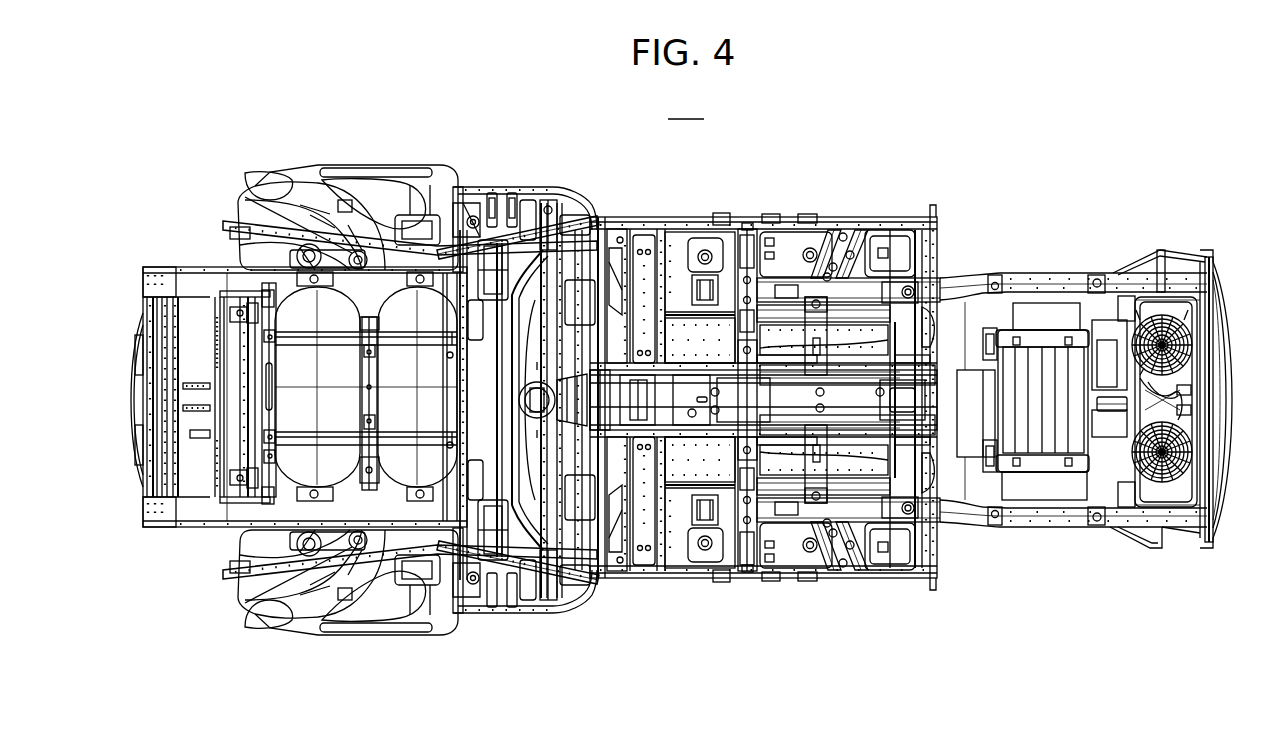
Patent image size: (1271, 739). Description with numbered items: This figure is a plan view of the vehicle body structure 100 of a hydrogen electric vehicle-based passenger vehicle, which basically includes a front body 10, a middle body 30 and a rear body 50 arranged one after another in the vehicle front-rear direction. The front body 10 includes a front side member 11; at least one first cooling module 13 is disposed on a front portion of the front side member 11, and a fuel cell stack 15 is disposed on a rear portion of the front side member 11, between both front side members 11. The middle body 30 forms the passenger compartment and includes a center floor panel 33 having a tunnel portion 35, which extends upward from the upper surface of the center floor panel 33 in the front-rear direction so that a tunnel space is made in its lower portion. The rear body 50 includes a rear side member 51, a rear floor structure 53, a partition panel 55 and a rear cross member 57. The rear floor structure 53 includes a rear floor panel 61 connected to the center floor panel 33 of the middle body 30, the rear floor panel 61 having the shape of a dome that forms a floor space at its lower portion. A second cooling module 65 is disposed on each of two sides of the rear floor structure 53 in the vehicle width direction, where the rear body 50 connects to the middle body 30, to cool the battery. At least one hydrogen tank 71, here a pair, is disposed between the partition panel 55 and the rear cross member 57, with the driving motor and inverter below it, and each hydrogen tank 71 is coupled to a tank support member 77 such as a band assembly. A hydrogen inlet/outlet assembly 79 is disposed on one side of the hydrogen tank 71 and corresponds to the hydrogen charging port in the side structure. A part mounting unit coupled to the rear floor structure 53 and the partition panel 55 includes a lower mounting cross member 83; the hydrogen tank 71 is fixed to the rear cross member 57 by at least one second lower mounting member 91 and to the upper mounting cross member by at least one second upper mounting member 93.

The vehicle body structure 100 is at (686, 107).
The front body 10 is at (1078, 557).
The front side member 11 is at (1076, 282).
The first cooling module 13 is at (1187, 383).
The fuel cell stack 15 is at (1046, 384).
The middle body 30 is at (740, 592).
The center floor panel 33 is at (690, 470).
The tunnel portion 35 is at (698, 368).
The rear body 50 is at (468, 625).
The rear side member 51 is at (175, 284).
The rear floor structure 53 is at (527, 216).
The partition panel 55 is at (525, 341).
The rear cross member 57 is at (192, 305).
The rear floor panel 61 is at (528, 580).
The second cooling module 65 is at (401, 268).
The hydrogen tank 71 is at (386, 330).
The tank support member 77 is at (406, 388).
The hydrogen inlet/outlet assembly 79 is at (335, 508).
The lower mounting cross member 83 is at (500, 228).
The second lower mounting member 91 is at (256, 470).
The second upper mounting member 93 is at (536, 582).